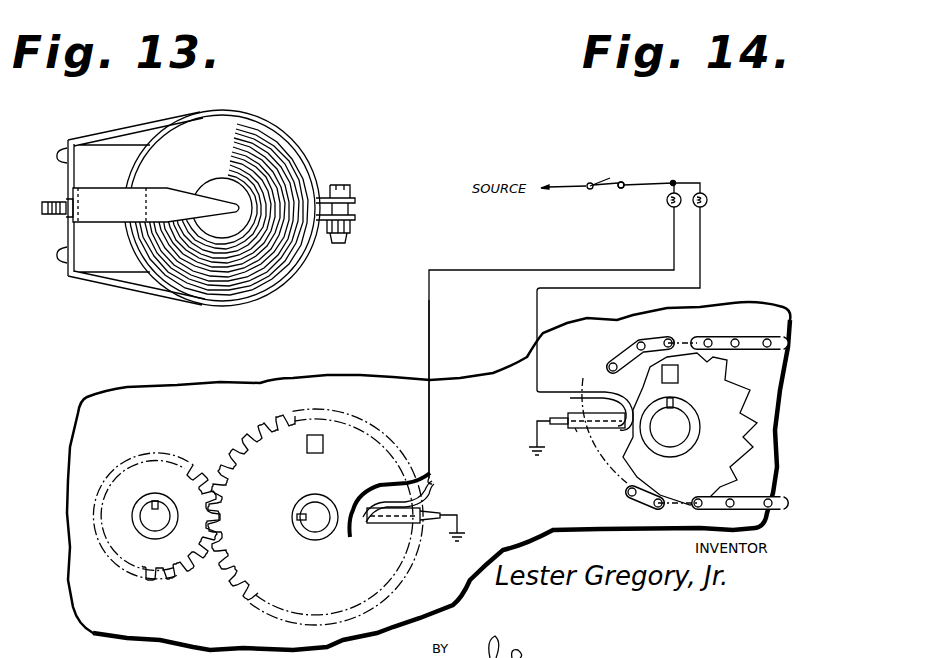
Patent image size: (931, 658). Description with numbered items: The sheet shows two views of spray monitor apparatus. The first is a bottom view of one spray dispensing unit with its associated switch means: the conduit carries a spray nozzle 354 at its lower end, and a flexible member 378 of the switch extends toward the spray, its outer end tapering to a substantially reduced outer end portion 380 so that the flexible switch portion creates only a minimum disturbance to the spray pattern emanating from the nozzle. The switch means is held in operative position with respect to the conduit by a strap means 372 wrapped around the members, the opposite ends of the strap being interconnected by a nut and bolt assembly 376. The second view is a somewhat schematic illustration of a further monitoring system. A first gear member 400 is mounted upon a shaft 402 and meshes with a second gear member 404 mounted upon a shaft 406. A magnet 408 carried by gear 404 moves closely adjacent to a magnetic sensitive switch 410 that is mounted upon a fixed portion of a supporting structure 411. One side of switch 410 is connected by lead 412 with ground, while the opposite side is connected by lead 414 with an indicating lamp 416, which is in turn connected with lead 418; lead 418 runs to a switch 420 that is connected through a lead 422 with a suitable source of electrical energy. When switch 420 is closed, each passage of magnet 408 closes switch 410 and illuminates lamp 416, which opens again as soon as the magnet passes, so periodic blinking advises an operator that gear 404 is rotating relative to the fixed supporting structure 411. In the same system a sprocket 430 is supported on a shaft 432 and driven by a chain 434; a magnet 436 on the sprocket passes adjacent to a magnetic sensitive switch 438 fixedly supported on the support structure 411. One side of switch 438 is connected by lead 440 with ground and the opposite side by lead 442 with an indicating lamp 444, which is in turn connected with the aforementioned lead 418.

In FIG. 13, the strap means 372 is at (148, 125).
In FIG. 13, the flexible member 378 is at (105, 192).
In FIG. 13, the spray nozzle 354 is at (218, 180).
In FIG. 13, the reduced outer end portion 380 is at (238, 203).
In FIG. 13, the nut and bolt assembly 376 is at (362, 217).
In FIG. 14, the lead 422 is at (574, 186).
In FIG. 14, the switch 420 is at (610, 182).
In FIG. 14, the lead 418 is at (673, 183).
In FIG. 14, the indicating lamp 416 is at (676, 207).
In FIG. 14, the indicating lamp 444 is at (708, 203).
In FIG. 14, the lead 414 is at (429, 345).
In FIG. 14, the first gear member 400 is at (180, 574).
In FIG. 14, the shaft 402 is at (160, 492).
In FIG. 14, the second gear member 404 is at (234, 587).
In FIG. 14, the shaft 406 is at (310, 533).
In FIG. 14, the magnet 408 is at (316, 434).
In FIG. 14, the magnetic sensitive switch 410 is at (389, 534).
In FIG. 14, the supporting structure 411 is at (490, 462).
In FIG. 14, the lead 412 is at (450, 515).
In FIG. 14, the lead 440 is at (537, 428).
In FIG. 14, the lead 442 is at (560, 390).
In FIG. 14, the magnetic sensitive switch 438 is at (578, 431).
In FIG. 14, the chain 434 is at (755, 340).
In FIG. 14, the shaft 432 is at (682, 428).
In FIG. 14, the magnet 436 is at (678, 374).
In FIG. 14, the sprocket 430 is at (634, 474).